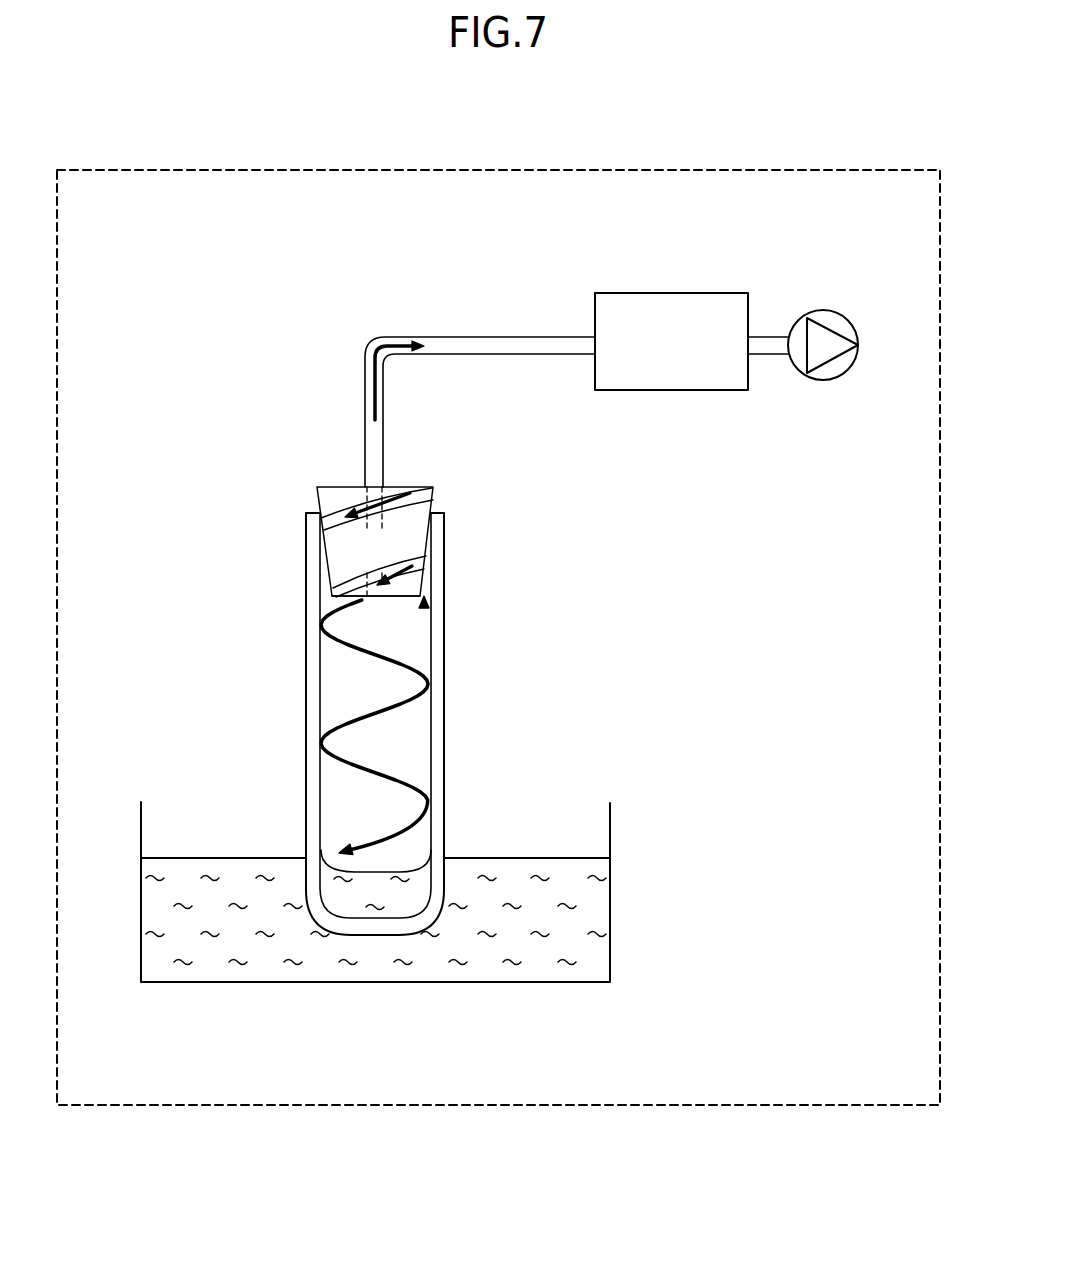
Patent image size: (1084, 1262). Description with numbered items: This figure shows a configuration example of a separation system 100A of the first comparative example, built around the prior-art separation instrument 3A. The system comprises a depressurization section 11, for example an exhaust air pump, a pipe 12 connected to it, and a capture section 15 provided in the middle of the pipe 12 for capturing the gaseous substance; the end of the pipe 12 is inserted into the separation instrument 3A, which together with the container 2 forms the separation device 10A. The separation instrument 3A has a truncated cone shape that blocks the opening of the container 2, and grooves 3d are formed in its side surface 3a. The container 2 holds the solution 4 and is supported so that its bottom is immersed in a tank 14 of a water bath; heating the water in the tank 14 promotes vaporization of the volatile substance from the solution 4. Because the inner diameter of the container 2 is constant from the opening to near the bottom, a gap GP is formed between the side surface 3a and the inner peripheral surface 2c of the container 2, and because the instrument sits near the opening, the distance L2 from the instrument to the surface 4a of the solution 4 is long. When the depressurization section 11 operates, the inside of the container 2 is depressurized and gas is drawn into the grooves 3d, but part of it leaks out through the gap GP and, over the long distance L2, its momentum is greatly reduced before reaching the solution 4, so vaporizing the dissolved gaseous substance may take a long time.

The separation system 100A is at (803, 168).
The separation device 10A is at (292, 485).
The separation instrument 3A is at (433, 489).
The grooves 3d is at (424, 565).
The side surface 3a is at (423, 590).
The container 2 is at (445, 620).
The gap GP is at (424, 606).
The inner peripheral surface 2c is at (420, 734).
The surface of the solution 4a is at (383, 864).
The solution 4 is at (348, 893).
The tank 14 is at (612, 920).
The pipe 12 is at (497, 337).
The capture section 15 is at (672, 293).
The depressurization section 11 is at (817, 310).
The distance L2 is at (306, 837).